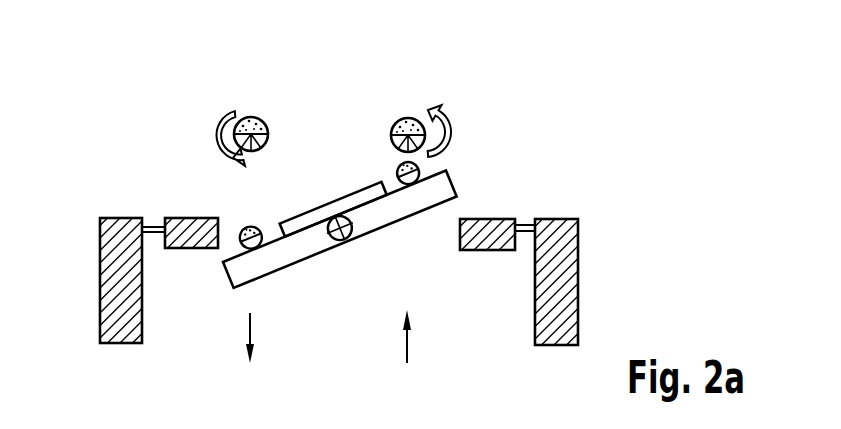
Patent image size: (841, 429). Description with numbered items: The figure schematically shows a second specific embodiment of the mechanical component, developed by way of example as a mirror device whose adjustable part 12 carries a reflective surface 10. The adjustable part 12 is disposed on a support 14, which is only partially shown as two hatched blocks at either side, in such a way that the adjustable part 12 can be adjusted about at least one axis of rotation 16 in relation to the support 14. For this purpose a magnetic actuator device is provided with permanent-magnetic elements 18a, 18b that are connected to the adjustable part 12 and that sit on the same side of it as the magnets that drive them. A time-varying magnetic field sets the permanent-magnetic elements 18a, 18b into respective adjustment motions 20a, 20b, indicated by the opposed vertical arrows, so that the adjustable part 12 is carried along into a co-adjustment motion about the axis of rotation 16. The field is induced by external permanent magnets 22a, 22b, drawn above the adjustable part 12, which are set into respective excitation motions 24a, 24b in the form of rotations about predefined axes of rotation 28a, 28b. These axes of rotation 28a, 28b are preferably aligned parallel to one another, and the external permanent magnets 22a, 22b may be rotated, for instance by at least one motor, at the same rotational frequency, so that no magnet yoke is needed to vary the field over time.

The reflective surface 10 is at (316, 203).
The adjustable part 12 is at (398, 209).
The support 14 is at (119, 276).
The axis of rotation 16 is at (355, 240).
The permanent-magnetic element 18a is at (246, 229).
The permanent-magnetic element 18b is at (416, 168).
The adjustment motion 20a is at (250, 331).
The adjustment motion 20b is at (408, 342).
The external permanent magnet 22a is at (267, 122).
The external permanent magnet 22b is at (403, 122).
The excitation motion 24a is at (226, 125).
The excitation motion 24b is at (434, 108).
The axis of rotation 28a is at (249, 116).
The axis of rotation 28b is at (410, 119).